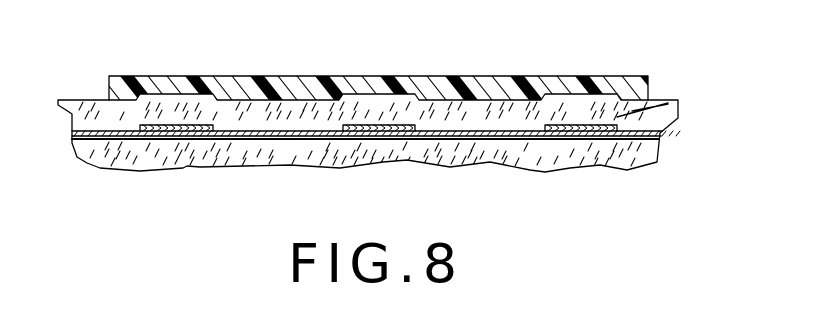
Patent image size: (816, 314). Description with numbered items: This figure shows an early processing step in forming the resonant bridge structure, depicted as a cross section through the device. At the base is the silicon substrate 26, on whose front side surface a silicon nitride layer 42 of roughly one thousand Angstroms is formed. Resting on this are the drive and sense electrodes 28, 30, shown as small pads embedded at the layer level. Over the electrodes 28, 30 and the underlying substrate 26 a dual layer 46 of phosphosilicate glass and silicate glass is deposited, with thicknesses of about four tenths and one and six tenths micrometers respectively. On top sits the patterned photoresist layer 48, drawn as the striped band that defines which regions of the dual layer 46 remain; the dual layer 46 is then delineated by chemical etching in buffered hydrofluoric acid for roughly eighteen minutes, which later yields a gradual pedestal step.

The silicon substrate 26 is at (592, 148).
The drive electrode 28 is at (390, 131).
The sense electrode 30 is at (566, 133).
The silicon nitride layer 42 is at (632, 139).
The dual layer 46 is at (674, 100).
The photoresist layer 48 is at (143, 87).